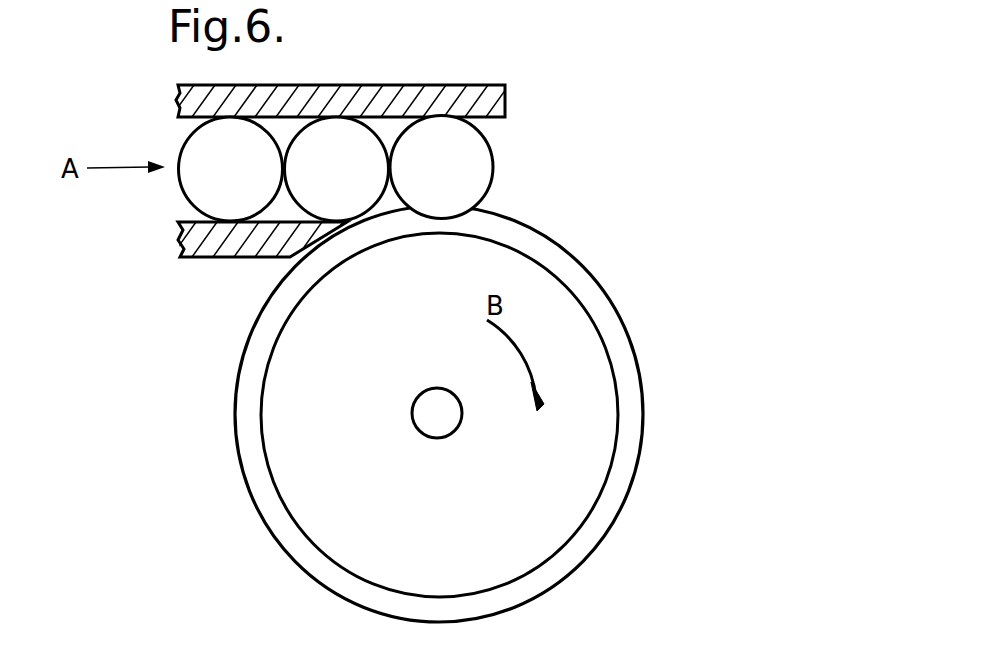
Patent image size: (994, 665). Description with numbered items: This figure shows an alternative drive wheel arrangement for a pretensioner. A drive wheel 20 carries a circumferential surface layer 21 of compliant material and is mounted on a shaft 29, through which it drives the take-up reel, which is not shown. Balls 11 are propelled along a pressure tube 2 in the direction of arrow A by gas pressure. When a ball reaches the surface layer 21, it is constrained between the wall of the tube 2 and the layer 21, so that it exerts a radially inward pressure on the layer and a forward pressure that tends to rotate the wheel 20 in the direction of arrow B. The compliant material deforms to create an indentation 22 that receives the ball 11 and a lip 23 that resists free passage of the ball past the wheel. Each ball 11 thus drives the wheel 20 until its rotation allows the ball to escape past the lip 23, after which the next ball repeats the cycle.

The pressure tube 2 is at (468, 87).
The balls 11 is at (478, 162).
The drive wheel 20 is at (570, 498).
The circumferential surface layer 21 is at (588, 303).
The indentation 22 is at (432, 218).
The lip 23 is at (496, 209).
The shaft 29 is at (423, 410).